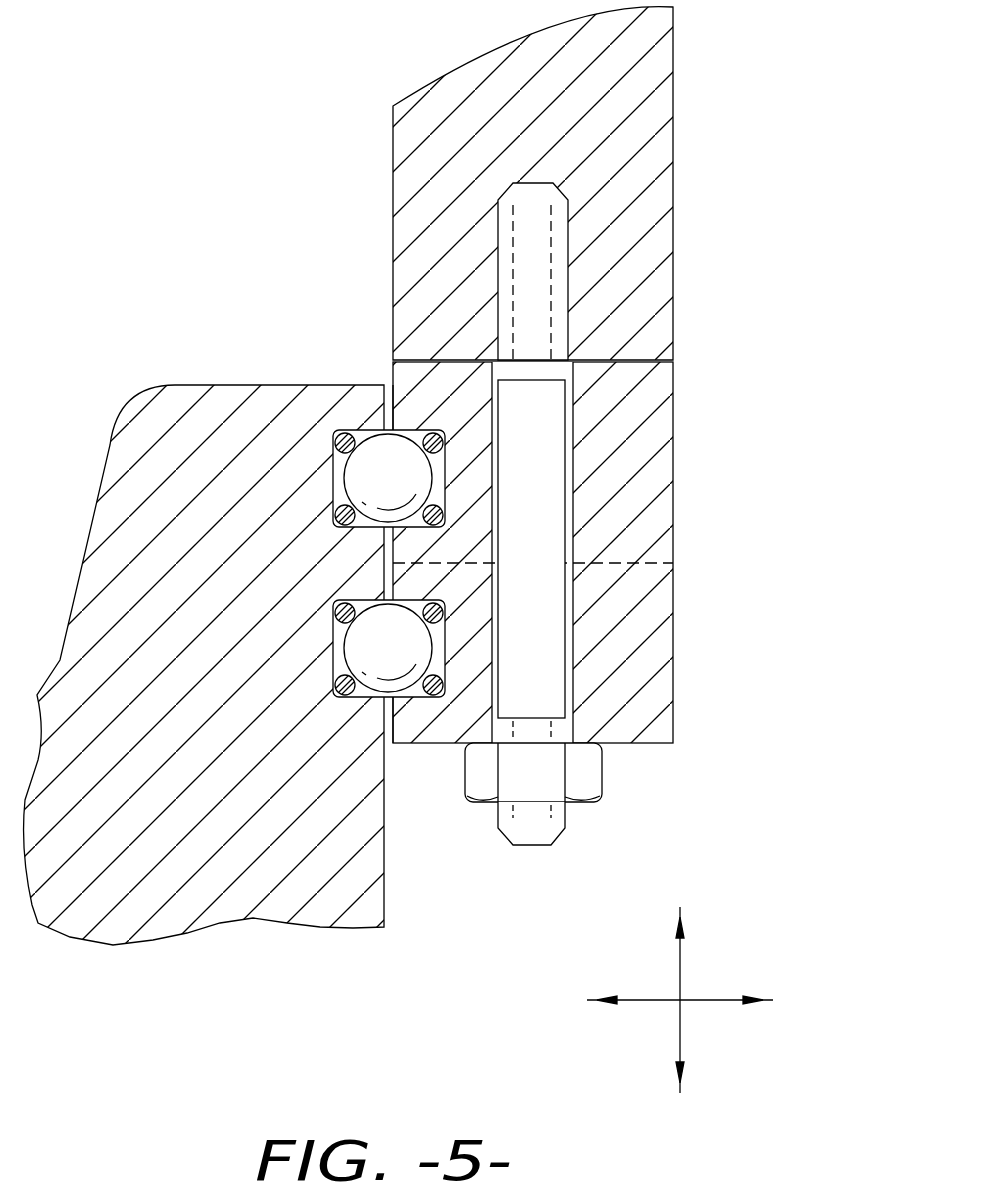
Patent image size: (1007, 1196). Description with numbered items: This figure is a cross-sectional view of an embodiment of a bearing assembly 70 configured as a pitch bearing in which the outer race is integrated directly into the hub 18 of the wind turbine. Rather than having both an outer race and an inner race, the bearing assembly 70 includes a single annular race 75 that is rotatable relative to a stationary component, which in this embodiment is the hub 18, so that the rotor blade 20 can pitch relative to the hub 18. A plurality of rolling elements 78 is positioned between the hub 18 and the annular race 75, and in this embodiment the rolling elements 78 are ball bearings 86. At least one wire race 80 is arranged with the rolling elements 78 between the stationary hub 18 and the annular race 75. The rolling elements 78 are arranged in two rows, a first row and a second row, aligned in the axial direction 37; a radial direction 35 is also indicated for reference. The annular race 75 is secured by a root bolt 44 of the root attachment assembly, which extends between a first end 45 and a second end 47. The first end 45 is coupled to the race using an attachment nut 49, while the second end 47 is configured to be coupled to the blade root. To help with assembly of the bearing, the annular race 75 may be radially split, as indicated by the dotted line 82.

The hub 18 is at (97, 570).
The rotor blade 20 is at (673, 132).
The radial direction 35 is at (708, 1003).
The axial direction 37 is at (680, 962).
The root bolt 44 is at (545, 614).
The first end 45 is at (535, 817).
The second end 47 is at (533, 247).
The attachment nut 49 is at (588, 772).
The bearing assembly 70 is at (740, 406).
The annular race 75 is at (673, 647).
The rolling elements 78 is at (392, 424).
The wire race 80 is at (333, 438).
The dotted line 82 is at (652, 565).
The ball bearings 86 is at (367, 642).